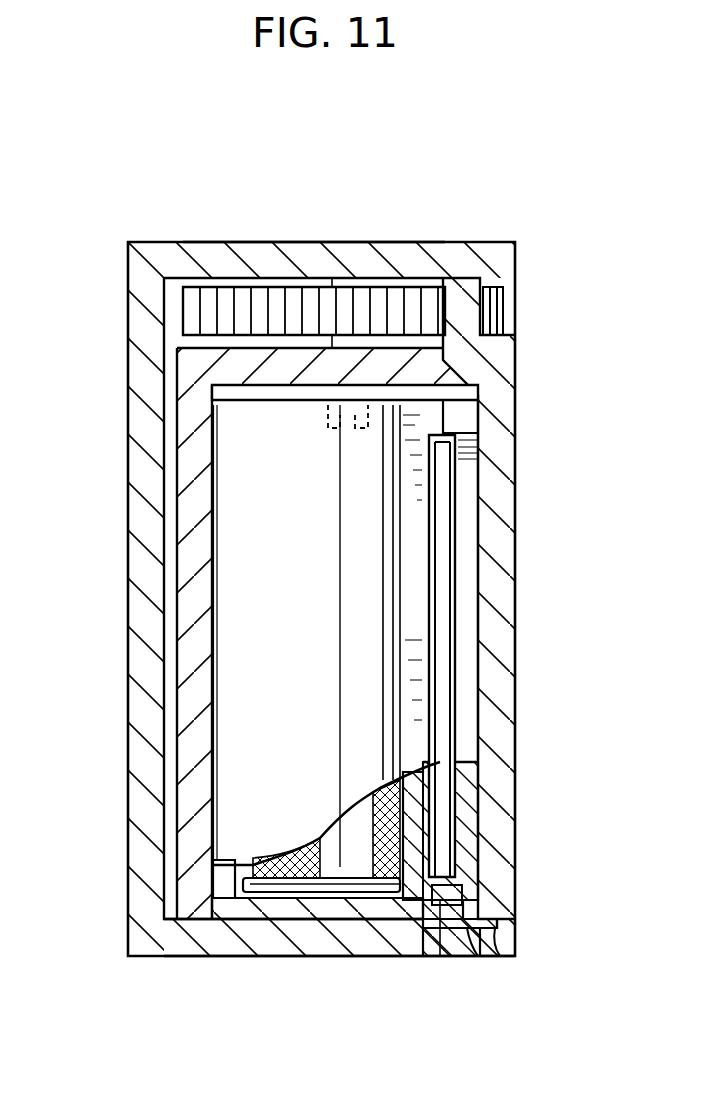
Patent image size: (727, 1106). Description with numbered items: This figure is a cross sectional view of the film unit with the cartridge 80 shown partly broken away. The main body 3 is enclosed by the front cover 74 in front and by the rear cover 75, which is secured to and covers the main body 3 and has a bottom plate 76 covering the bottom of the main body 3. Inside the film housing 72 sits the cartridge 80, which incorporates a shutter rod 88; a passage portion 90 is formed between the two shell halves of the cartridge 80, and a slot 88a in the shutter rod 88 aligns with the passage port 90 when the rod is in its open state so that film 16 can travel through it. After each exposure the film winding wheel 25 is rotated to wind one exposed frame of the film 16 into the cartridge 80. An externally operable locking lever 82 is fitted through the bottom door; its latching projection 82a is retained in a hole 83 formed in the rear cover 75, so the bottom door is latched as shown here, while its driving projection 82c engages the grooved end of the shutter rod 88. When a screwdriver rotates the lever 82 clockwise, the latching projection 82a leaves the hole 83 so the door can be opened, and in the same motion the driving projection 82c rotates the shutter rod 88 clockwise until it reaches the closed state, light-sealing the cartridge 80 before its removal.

The film housing 72 is at (320, 230).
The film winding wheel 25 is at (500, 312).
The main body 3 is at (186, 378).
The rear cover 75 is at (510, 468).
The front cover 74 is at (130, 552).
The passage port 90 is at (458, 599).
The cartridge 80 is at (228, 645).
The film 16 is at (292, 855).
The slot 88a is at (452, 787).
The shutter rod 88 is at (458, 838).
The driving projection 82c is at (452, 890).
The locking lever 82 is at (430, 962).
The latching projection 82a is at (472, 956).
The hole 83 is at (490, 950).
The bottom plate 76 is at (222, 950).